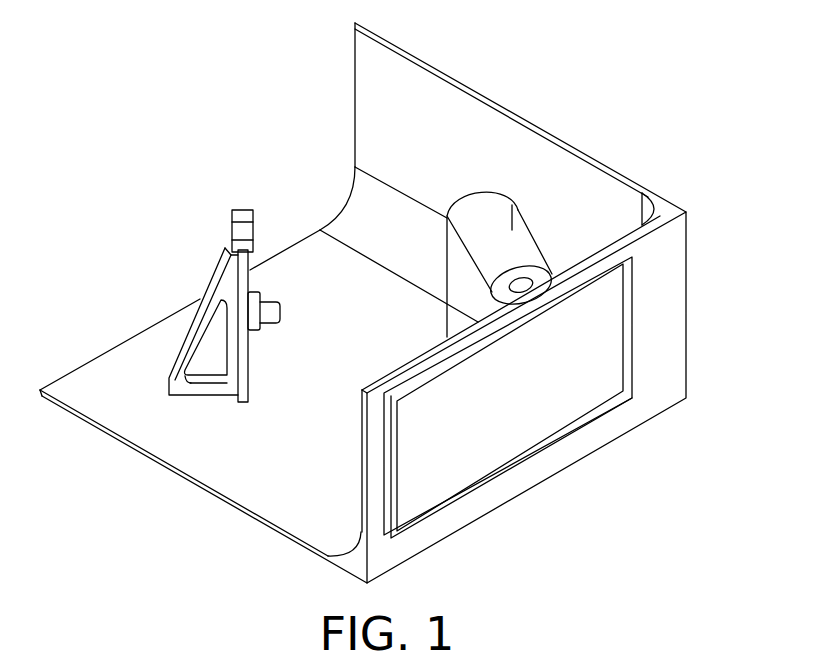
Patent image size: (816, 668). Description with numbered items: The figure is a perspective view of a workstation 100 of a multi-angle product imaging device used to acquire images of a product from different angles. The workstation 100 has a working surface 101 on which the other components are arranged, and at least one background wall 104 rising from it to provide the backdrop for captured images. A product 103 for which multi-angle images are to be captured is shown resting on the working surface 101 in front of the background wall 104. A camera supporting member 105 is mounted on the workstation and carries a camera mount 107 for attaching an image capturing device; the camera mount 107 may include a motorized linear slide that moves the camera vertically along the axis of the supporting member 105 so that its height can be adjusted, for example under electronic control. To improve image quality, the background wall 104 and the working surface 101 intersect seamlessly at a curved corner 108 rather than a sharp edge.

The workstation 100 is at (157, 171).
The working surface 101 is at (282, 508).
The product 103 is at (494, 218).
The background wall 104 is at (667, 338).
The camera supporting member 105 is at (173, 362).
The camera mount 107 is at (253, 210).
The curved corner 108 is at (342, 204).